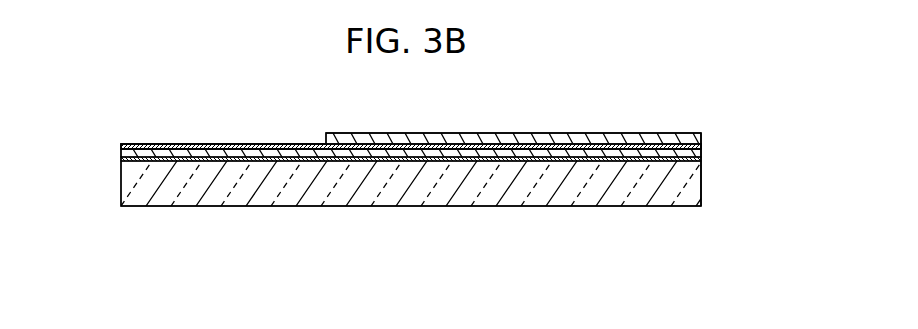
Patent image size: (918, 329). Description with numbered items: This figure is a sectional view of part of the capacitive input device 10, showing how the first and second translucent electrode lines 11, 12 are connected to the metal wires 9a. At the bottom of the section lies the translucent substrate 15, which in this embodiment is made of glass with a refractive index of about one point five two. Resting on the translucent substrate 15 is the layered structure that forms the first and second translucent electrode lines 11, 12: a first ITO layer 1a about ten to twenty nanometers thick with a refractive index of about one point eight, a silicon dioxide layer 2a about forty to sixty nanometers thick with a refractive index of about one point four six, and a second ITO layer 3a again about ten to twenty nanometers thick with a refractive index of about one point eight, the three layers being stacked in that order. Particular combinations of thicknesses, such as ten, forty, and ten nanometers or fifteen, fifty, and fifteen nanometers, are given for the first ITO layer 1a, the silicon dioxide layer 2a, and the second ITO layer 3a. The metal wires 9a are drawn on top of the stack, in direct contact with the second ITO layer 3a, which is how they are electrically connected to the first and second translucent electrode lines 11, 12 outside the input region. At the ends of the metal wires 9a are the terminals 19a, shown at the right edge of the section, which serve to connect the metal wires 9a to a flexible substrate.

The first ITO layer 1a is at (195, 160).
The silicon dioxide layer 2a is at (252, 153).
The second ITO layer 3a is at (287, 145).
The metal wires 9a is at (529, 133).
The capacitive input device 10 is at (681, 111).
The first translucent electrode lines 11 is at (154, 134).
The second translucent electrode lines 12 is at (154, 134).
The translucent substrate 15 is at (685, 188).
The terminals 19a is at (706, 114).